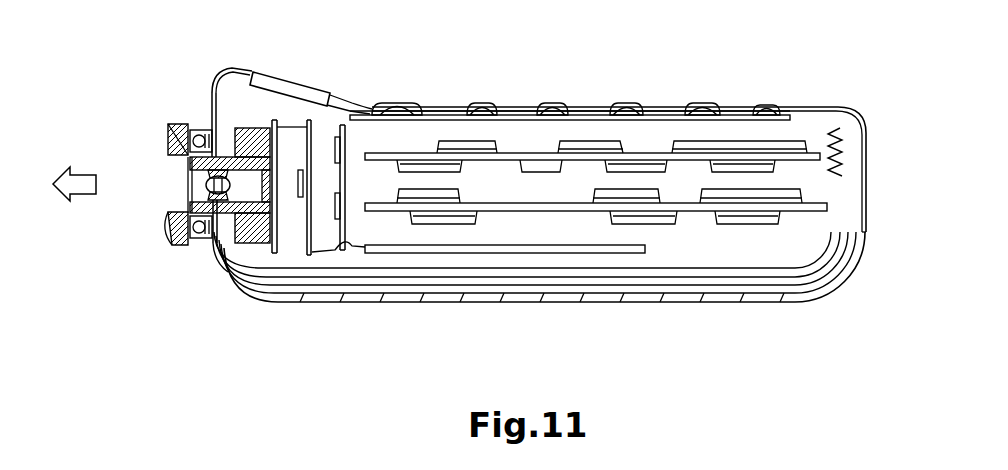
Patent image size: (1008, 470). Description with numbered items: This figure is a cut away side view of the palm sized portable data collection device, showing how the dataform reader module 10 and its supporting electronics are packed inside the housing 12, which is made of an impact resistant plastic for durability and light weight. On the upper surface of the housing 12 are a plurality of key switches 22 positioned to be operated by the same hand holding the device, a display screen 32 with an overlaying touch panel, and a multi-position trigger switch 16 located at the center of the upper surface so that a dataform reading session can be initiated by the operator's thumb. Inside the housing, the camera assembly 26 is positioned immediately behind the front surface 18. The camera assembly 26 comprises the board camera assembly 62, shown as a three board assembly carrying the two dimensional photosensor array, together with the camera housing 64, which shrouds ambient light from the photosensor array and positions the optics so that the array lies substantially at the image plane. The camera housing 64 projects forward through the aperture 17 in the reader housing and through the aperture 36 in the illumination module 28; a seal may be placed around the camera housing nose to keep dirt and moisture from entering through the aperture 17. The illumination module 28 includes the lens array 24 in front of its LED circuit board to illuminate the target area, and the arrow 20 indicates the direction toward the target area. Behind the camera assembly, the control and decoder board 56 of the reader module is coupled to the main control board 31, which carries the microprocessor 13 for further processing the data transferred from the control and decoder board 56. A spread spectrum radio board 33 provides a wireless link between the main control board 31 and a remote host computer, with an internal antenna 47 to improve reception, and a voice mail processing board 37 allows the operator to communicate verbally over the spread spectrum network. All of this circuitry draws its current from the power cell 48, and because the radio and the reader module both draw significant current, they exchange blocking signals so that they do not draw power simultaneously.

The dataform reader module 10 is at (745, 326).
The housing 12 is at (243, 68).
The microprocessor 13 is at (695, 143).
The trigger switch 16 is at (402, 102).
The aperture 17 is at (175, 150).
The front surface 18 is at (210, 93).
The optical signal direction 20 is at (86, 203).
The key switches 22 is at (545, 103).
The lens array 24 is at (177, 213).
The camera assembly 26 is at (187, 184).
The illumination module 28 is at (167, 147).
The main control board 31 is at (813, 147).
The display screen 32 is at (297, 73).
The spread spectrum radio board 33 is at (813, 205).
The aperture in the illumination module 36 is at (177, 163).
The voice mail processing board 37 is at (490, 210).
The internal antenna 47 is at (838, 160).
The power cell 48 is at (513, 288).
The control and decoder board 56 is at (397, 250).
The board camera assembly 62 is at (330, 255).
The camera housing 64 is at (243, 282).